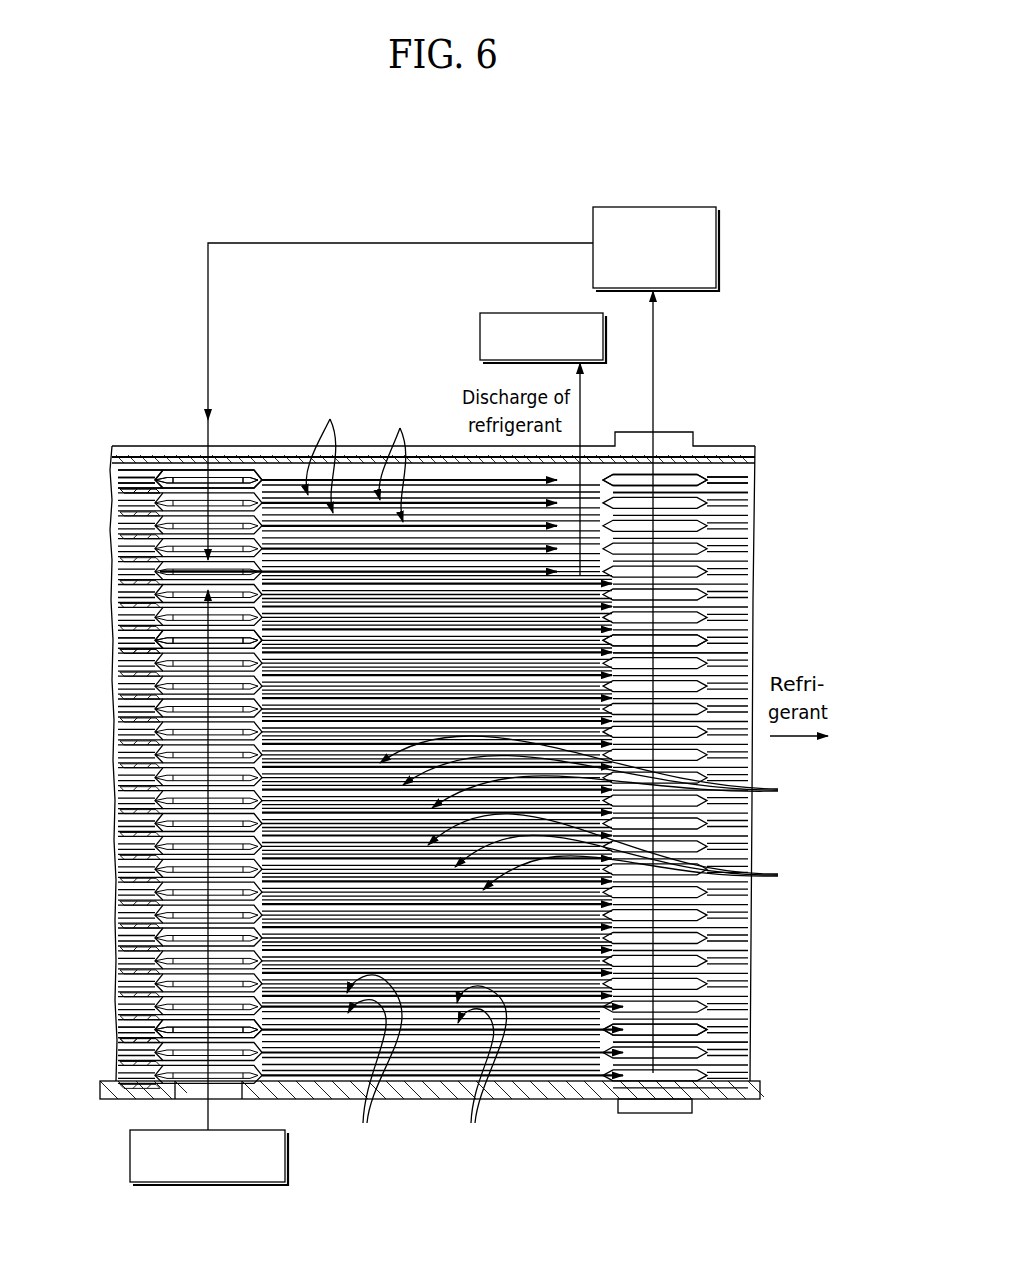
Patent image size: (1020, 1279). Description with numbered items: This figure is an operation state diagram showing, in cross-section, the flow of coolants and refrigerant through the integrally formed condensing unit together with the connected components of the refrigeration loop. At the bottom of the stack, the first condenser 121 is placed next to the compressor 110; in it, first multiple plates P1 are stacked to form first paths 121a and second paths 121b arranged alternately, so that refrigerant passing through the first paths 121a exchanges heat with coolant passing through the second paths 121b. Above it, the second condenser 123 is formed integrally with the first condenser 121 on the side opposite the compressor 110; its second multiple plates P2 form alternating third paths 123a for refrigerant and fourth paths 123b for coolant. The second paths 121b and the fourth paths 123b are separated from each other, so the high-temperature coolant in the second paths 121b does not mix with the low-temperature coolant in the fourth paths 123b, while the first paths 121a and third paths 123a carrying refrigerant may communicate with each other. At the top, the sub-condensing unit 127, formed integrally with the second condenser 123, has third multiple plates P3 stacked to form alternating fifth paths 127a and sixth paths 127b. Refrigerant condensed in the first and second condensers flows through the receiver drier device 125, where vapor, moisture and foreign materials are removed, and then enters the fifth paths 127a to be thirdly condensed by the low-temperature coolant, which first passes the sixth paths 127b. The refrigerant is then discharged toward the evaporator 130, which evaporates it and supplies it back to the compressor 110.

The compressor 110 is at (130, 1155).
The receiver drier device 125 is at (652, 207).
The evaporator 130 is at (480, 338).
The sub-condensing unit 127 is at (93, 465).
The fifth paths 127a is at (326, 453).
The sixth paths 127b is at (398, 461).
The second condenser 123 is at (93, 972).
The third paths 123a is at (629, 852).
The fourth paths 123b is at (605, 772).
The first condenser 121 is at (93, 977).
The first paths 121a is at (481, 1071).
The second paths 121b is at (373, 1066).
The first multiple plates P1 is at (757, 1050).
The second multiple plates P2 is at (757, 650).
The third multiple plates P3 is at (757, 491).